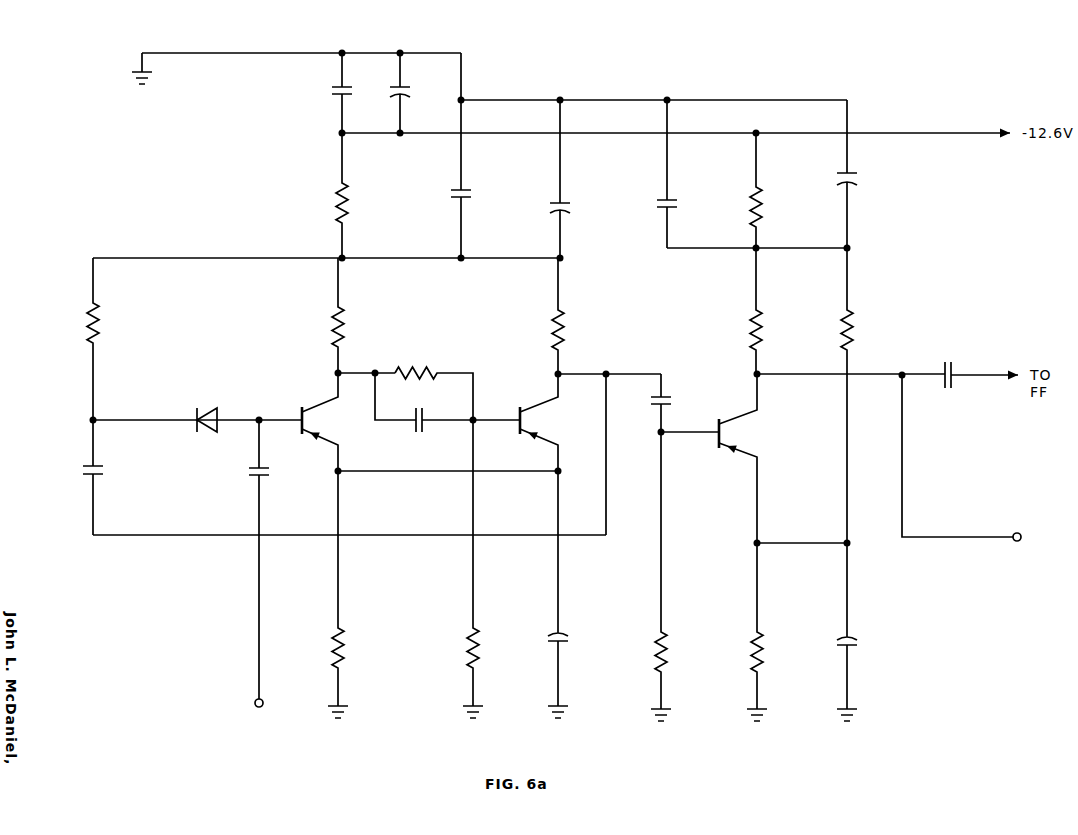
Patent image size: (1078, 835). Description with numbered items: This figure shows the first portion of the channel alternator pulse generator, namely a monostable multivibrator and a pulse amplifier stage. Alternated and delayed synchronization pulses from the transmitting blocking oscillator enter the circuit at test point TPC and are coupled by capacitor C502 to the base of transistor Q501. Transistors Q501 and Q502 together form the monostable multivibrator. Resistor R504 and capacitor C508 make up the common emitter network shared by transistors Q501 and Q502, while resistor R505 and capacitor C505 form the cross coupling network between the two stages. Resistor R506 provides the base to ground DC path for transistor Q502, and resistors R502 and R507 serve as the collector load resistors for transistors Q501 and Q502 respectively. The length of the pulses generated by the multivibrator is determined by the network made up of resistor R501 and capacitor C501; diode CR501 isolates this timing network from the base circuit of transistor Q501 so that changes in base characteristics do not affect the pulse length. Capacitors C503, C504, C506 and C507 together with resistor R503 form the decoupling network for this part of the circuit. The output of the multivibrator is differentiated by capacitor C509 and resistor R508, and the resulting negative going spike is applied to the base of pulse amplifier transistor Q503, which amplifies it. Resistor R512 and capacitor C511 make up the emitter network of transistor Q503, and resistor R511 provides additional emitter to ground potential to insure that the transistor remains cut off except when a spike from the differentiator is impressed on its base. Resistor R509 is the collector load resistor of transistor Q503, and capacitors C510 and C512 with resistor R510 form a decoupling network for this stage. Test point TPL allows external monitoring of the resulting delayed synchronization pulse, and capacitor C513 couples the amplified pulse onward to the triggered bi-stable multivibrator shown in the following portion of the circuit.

The capacitor C501 is at (80, 468).
The capacitor C502 is at (247, 475).
The capacitor C503 is at (330, 90).
The capacitor C504 is at (406, 93).
The capacitor C505 is at (415, 435).
The capacitor C506 is at (450, 193).
The capacitor C507 is at (550, 206).
The capacitor C508 is at (562, 641).
The capacitor C509 is at (668, 393).
The capacitor C510 is at (658, 200).
The capacitor C511 is at (852, 646).
The capacitor C512 is at (858, 178).
The capacitor C513 is at (945, 360).
The resistor R501 is at (100, 313).
The resistor R502 is at (345, 313).
The resistor R503 is at (336, 187).
The resistor R504 is at (346, 635).
The resistor R505 is at (418, 366).
The resistor R506 is at (468, 648).
The resistor R507 is at (565, 316).
The resistor R508 is at (667, 642).
The resistor R509 is at (752, 315).
The resistor R510 is at (766, 198).
The resistor R511 is at (852, 317).
The resistor R512 is at (760, 645).
The transistor Q501 is at (308, 419).
The transistor Q502 is at (526, 423).
The pulse amplifier transistor Q503 is at (726, 431).
The diode CR501 is at (208, 433).
The test point TPC is at (254, 712).
The test point TPL is at (1034, 537).